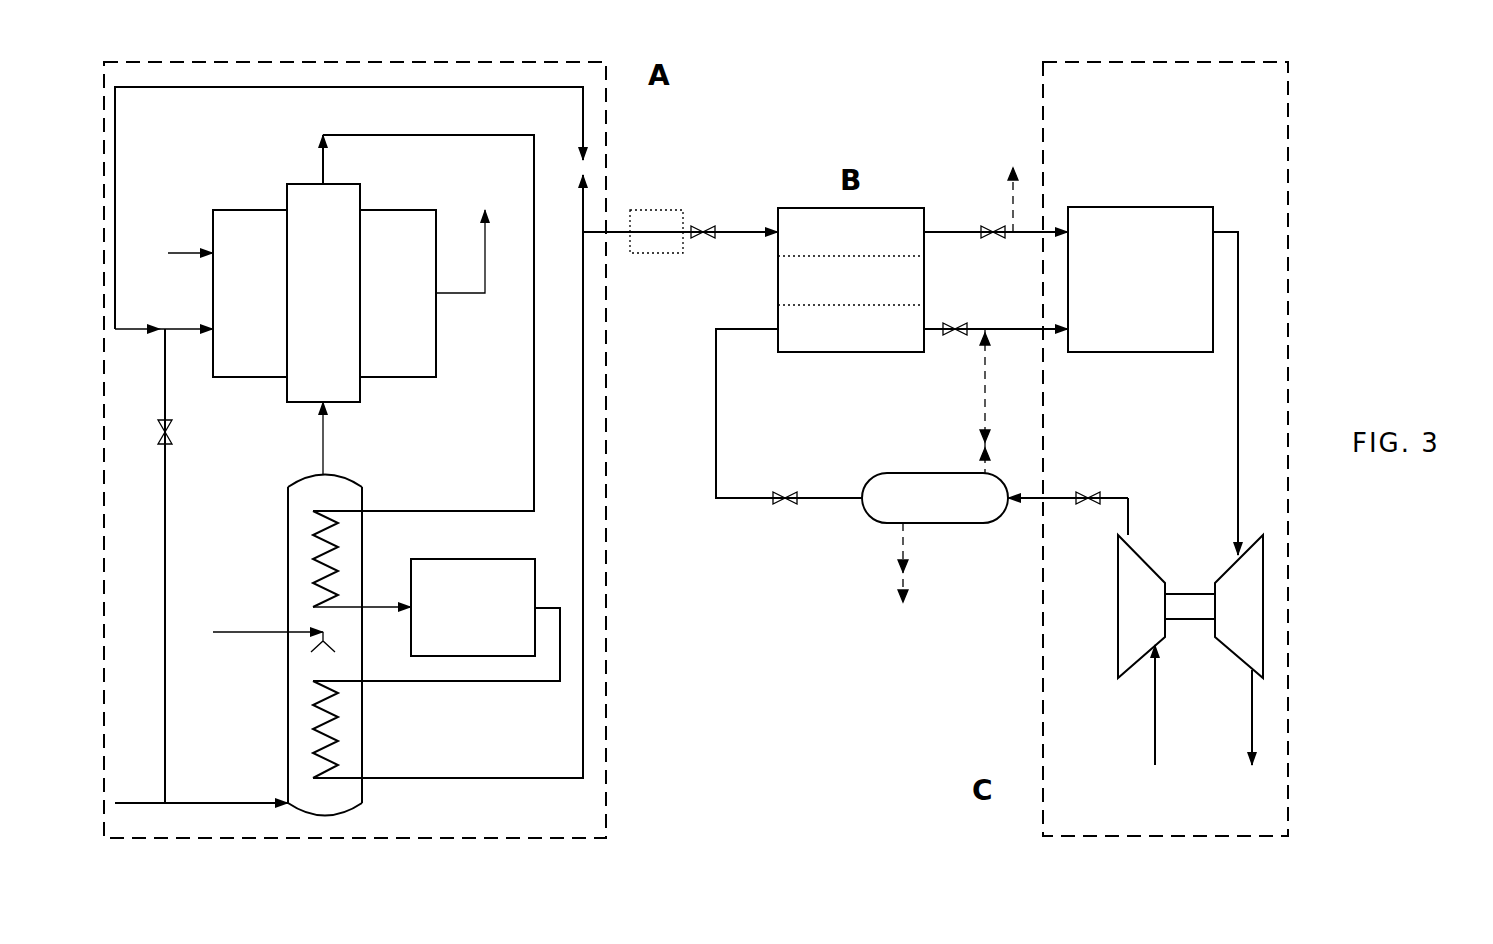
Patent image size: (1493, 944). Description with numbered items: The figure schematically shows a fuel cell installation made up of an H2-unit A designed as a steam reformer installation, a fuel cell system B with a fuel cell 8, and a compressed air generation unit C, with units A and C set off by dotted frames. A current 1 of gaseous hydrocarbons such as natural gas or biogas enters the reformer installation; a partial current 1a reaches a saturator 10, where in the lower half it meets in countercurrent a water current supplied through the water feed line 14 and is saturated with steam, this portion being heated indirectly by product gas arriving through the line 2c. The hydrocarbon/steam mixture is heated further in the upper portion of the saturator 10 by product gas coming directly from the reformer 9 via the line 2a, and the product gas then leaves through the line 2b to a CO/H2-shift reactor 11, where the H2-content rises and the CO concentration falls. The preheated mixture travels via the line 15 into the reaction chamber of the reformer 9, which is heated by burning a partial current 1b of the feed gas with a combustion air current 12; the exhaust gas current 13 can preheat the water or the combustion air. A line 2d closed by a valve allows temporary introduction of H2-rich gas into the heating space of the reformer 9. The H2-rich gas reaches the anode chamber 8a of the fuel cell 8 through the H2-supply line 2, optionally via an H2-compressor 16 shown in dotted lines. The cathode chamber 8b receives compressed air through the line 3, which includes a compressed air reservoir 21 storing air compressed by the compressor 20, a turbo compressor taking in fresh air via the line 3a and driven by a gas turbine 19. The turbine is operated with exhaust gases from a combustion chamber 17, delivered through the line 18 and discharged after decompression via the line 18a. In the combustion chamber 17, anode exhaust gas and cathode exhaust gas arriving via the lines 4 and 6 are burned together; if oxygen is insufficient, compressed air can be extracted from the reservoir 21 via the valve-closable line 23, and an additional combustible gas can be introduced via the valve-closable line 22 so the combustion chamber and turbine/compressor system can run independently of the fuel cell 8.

The current of gaseous hydrocarbons 1 is at (152, 798).
The partial current of hydrocarbons 1a is at (203, 798).
The partial current of supplied gas 1b is at (165, 530).
The H2-supply line 2 is at (583, 538).
The product gas line from reformer 2a is at (534, 408).
The product gas line to shift reactor 2b is at (385, 607).
The product gas line to saturator lower heat exchanger 2c is at (405, 681).
The valve-closed line 2d is at (350, 90).
The compressed air line 3 is at (716, 468).
The fresh air line 3a is at (1150, 715).
The anode exhaust gas line 4 is at (962, 232).
The cathode exhaust gas line 6 is at (937, 336).
The fuel cell 8 is at (854, 300).
The anode chamber 8a is at (818, 239).
The cathode chamber 8b is at (818, 335).
The reformer 9 is at (334, 288).
The saturator 10 is at (300, 482).
The CO/H2-shift reactor 11 is at (492, 622).
The combustion air current 12 is at (181, 250).
The exhaust gas current 13 is at (458, 295).
The water feed line 14 is at (262, 632).
The hydrocarbon/steam mixture line 15 is at (323, 437).
The H2-compressor 16 is at (661, 210).
The combustion chamber 17 is at (1162, 298).
The combustion exhaust gas line 18 is at (1238, 408).
The turbine discharge line 18a is at (1215, 717).
The gas turbine 19 is at (1239, 606).
The compressor 20 is at (1166, 606).
The compressed air reservoir 21 is at (885, 523).
The additional combustible gas line 22 is at (1010, 170).
The compressed air extraction line 23 is at (988, 410).